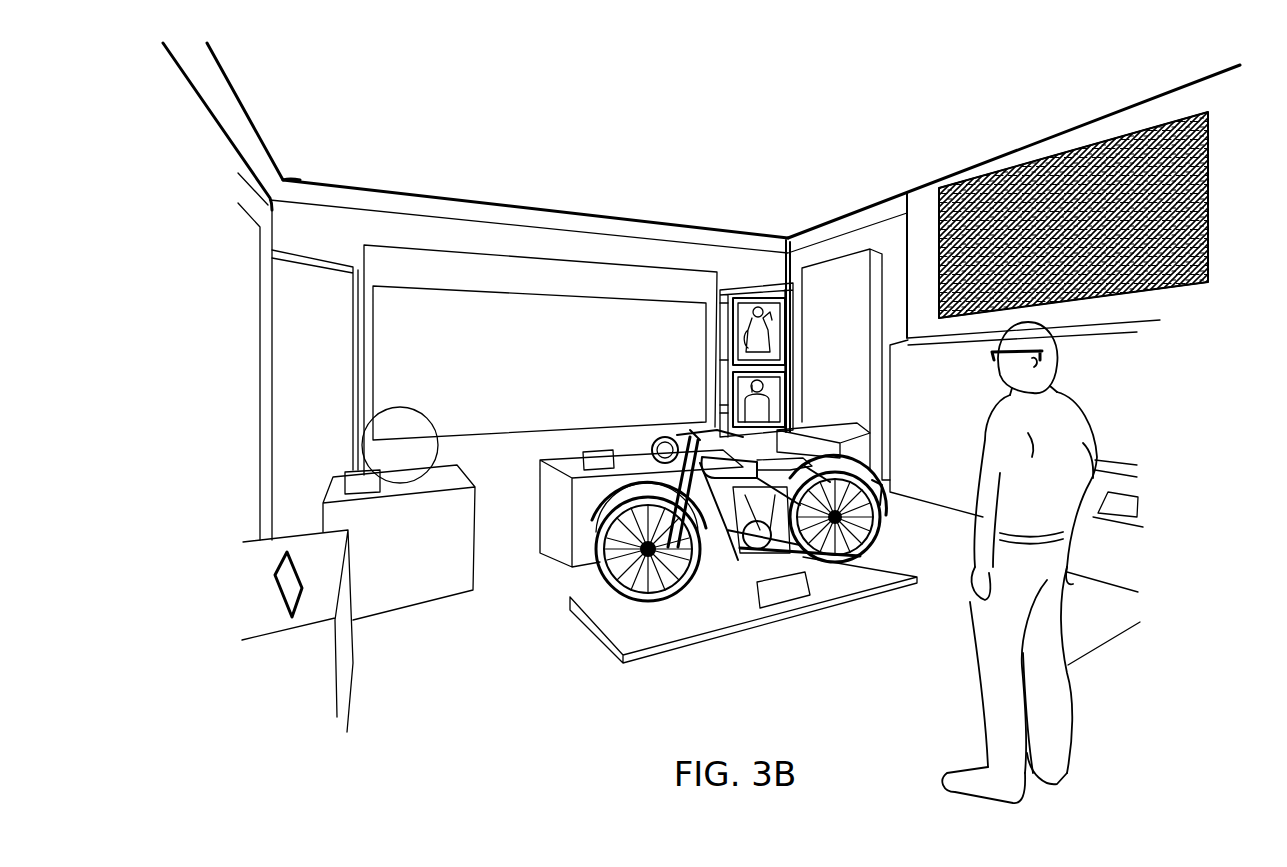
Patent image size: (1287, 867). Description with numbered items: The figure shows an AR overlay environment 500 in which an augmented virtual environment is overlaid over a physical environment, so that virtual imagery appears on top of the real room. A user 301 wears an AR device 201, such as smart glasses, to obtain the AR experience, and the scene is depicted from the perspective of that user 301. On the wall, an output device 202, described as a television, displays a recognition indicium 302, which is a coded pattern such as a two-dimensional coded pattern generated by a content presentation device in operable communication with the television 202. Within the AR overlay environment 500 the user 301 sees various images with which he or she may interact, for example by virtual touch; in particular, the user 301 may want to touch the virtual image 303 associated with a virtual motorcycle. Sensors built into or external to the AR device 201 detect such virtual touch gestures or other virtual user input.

The AR overlay environment 500 is at (430, 147).
The output device 202 is at (1003, 185).
The recognition indicium 302 is at (1210, 163).
The AR device 201 is at (992, 353).
The user 301 is at (1070, 417).
The virtual image 303 is at (655, 593).